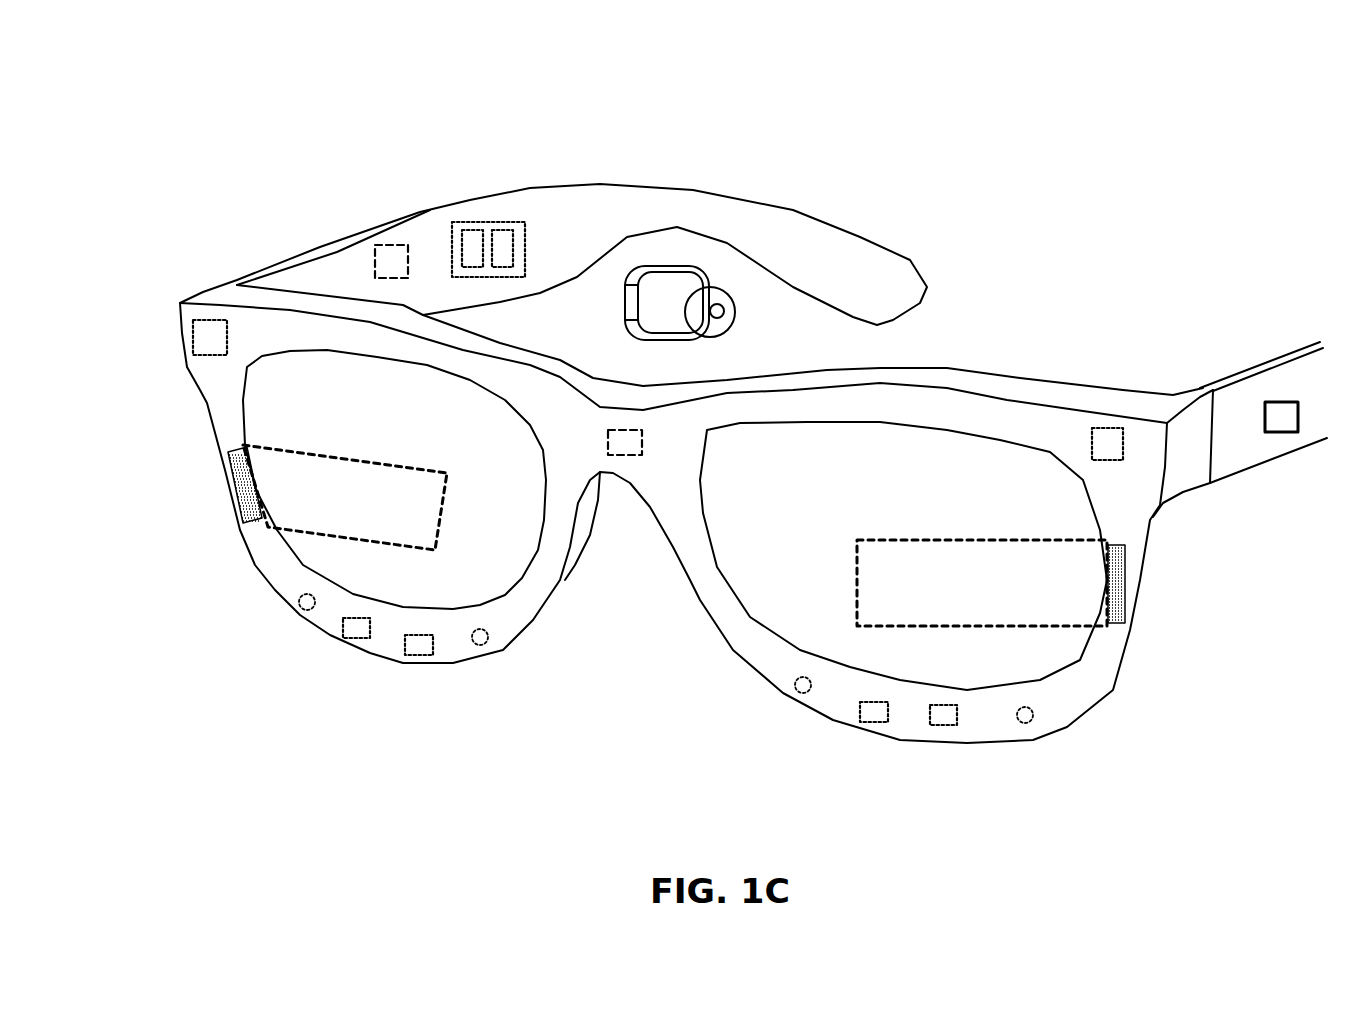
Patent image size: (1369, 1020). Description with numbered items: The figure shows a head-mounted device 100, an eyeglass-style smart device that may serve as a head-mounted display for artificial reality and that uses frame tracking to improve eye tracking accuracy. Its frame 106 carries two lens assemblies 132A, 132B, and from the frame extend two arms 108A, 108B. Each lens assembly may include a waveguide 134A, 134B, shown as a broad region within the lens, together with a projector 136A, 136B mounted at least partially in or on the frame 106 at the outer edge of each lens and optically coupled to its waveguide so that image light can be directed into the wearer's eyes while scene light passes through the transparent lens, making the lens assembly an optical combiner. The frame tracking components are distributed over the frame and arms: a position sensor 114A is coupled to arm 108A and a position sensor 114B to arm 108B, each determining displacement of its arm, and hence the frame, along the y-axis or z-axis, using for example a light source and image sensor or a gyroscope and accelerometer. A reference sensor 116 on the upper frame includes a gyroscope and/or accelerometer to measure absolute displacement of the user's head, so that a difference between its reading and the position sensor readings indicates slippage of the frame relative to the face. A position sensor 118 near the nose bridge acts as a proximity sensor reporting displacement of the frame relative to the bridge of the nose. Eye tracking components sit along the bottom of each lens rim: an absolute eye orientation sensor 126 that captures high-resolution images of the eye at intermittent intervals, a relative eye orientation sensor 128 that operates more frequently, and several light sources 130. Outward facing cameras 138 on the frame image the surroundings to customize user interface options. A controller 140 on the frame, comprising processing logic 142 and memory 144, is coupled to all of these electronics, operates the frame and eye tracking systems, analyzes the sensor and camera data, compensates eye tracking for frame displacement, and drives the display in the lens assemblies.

The head-mounted device 100 is at (816, 67).
The frame 106 is at (203, 295).
The arm 108A is at (1298, 387).
The arm 108B is at (850, 247).
The position sensor 114A is at (1290, 425).
The position sensor 114B is at (377, 260).
The reference sensor 116 is at (675, 282).
The position sensor 118 is at (630, 447).
The absolute eye orientation sensor 126 is at (352, 635).
The relative eye orientation sensor 128 is at (415, 652).
The light source 130 is at (303, 606).
The lens assembly 132A is at (948, 486).
The lens assembly 132B is at (440, 412).
The waveguide 134A is at (1013, 627).
The waveguide 134B is at (350, 537).
The projector 136A is at (1125, 588).
The projector 136B is at (243, 492).
The outward facing camera 138 is at (1140, 345).
The controller 140 is at (518, 230).
The processing logic 142 is at (468, 238).
The memory 144 is at (500, 237).